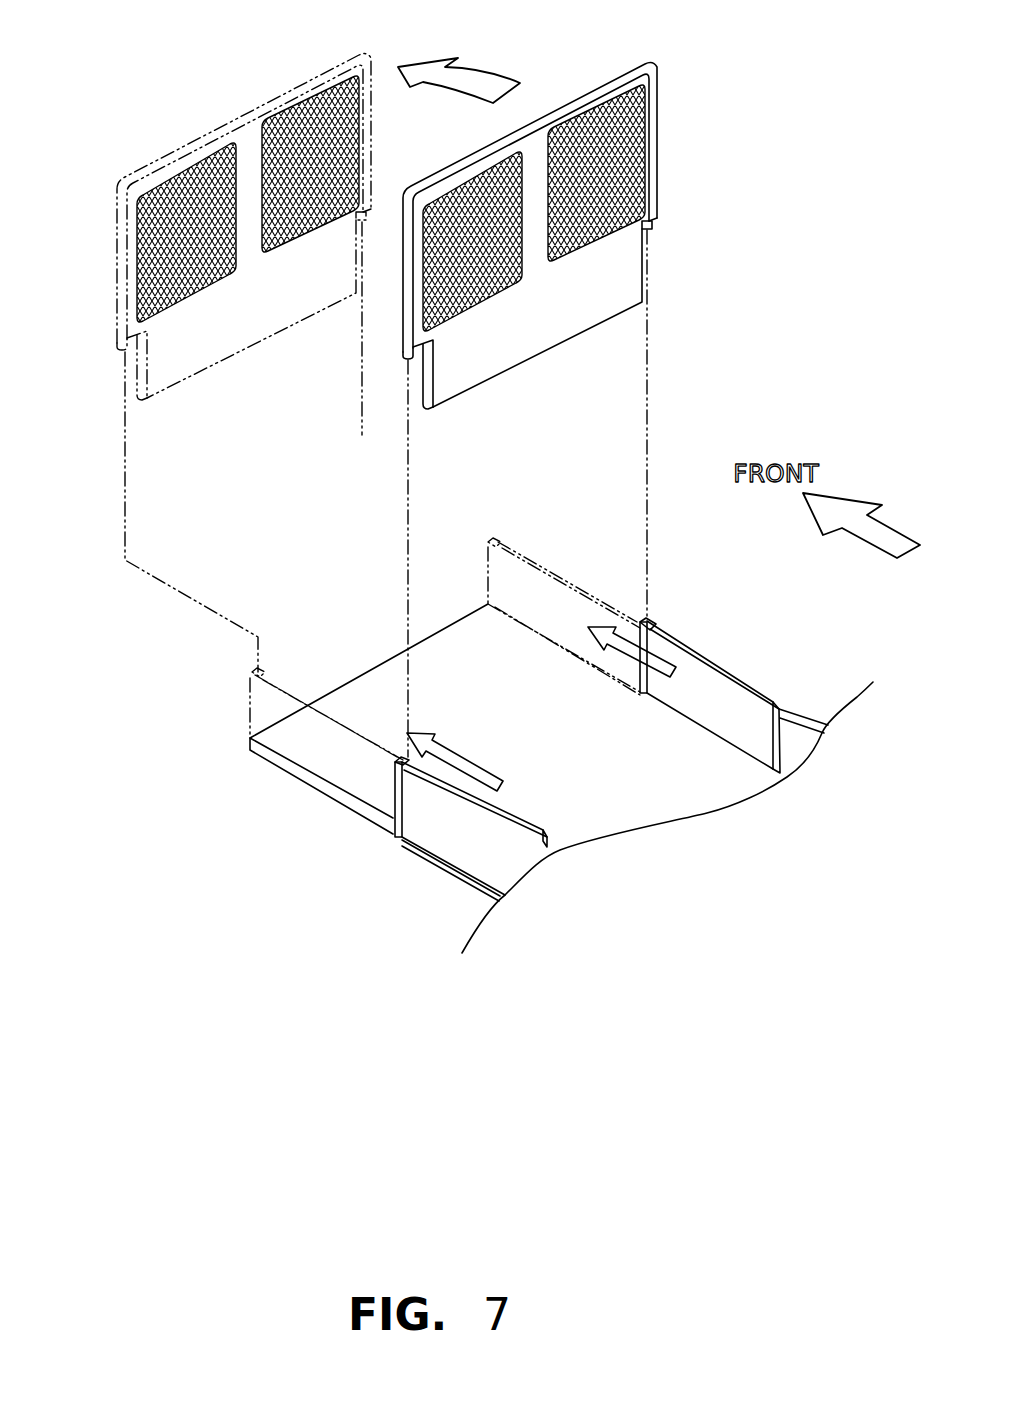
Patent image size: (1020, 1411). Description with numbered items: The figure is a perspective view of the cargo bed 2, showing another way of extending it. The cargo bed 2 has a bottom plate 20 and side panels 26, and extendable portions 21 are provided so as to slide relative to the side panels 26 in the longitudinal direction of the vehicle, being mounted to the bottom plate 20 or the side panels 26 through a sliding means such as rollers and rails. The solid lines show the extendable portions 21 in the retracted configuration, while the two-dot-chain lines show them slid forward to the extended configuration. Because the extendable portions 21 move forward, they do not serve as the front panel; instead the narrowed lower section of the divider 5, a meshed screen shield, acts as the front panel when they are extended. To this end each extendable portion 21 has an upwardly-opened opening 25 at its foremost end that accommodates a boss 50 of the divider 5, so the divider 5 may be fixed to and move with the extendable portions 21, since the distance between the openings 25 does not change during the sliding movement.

The cargo bed 2 is at (560, 711).
The divider 5 is at (222, 122).
The bottom plate 20 is at (707, 803).
The extendable portion 21 is at (312, 762).
The upwardly-opened opening 25 is at (496, 541).
The side panel 26 is at (800, 708).
The boss 50 is at (118, 352).